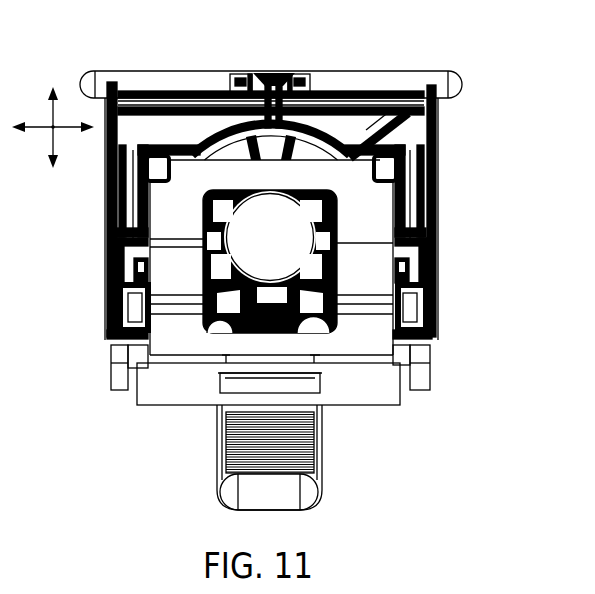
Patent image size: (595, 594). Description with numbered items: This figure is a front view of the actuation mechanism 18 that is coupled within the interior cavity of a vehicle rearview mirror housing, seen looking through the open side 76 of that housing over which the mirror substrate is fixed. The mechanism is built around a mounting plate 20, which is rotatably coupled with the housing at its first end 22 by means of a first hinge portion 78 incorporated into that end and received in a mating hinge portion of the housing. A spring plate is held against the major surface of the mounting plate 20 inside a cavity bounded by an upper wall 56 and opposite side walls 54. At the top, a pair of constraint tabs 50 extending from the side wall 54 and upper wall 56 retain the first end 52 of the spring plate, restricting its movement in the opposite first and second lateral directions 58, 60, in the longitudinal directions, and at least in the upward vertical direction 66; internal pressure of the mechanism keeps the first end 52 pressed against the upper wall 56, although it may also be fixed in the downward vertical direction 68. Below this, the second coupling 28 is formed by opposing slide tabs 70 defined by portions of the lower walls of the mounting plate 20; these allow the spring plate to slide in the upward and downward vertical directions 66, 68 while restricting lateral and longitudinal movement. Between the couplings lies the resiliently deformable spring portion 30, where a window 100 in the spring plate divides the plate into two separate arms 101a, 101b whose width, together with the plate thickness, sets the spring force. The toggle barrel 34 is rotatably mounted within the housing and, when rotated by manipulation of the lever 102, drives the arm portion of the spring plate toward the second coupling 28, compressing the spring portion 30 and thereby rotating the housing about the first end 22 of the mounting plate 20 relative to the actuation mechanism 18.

The actuation mechanism 18 is at (261, 170).
The mounting plate 20 is at (443, 194).
The first end 22 is at (249, 69).
The second coupling 28 is at (162, 333).
The spring portion 30 is at (130, 276).
The toggle barrel 34 is at (366, 392).
The constraint tabs 50 is at (156, 162).
The first end 52 is at (269, 164).
The side wall 54 is at (175, 150).
The upper wall 56 is at (142, 168).
The first lateral direction 58 is at (42, 127).
The second lateral direction 60 is at (58, 122).
The upward vertical direction 66 is at (50, 107).
The downward vertical direction 68 is at (57, 143).
The slide tabs 70 is at (122, 344).
The open side 76 is at (184, 172).
The first hinge portion 78 is at (136, 80).
The window 100 is at (240, 312).
The first arm 101a is at (170, 258).
The second arm 101b is at (372, 268).
The lever 102 is at (290, 493).